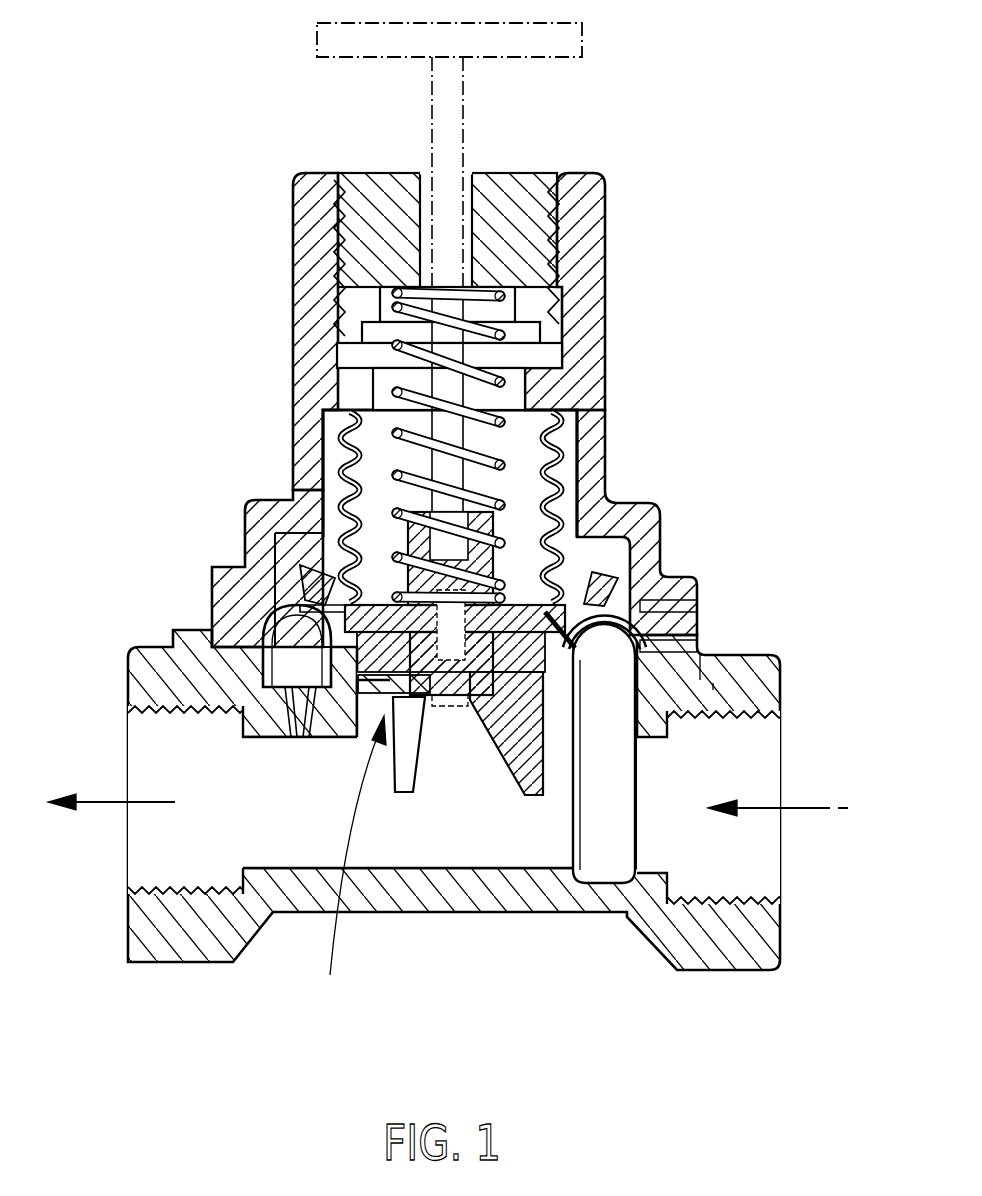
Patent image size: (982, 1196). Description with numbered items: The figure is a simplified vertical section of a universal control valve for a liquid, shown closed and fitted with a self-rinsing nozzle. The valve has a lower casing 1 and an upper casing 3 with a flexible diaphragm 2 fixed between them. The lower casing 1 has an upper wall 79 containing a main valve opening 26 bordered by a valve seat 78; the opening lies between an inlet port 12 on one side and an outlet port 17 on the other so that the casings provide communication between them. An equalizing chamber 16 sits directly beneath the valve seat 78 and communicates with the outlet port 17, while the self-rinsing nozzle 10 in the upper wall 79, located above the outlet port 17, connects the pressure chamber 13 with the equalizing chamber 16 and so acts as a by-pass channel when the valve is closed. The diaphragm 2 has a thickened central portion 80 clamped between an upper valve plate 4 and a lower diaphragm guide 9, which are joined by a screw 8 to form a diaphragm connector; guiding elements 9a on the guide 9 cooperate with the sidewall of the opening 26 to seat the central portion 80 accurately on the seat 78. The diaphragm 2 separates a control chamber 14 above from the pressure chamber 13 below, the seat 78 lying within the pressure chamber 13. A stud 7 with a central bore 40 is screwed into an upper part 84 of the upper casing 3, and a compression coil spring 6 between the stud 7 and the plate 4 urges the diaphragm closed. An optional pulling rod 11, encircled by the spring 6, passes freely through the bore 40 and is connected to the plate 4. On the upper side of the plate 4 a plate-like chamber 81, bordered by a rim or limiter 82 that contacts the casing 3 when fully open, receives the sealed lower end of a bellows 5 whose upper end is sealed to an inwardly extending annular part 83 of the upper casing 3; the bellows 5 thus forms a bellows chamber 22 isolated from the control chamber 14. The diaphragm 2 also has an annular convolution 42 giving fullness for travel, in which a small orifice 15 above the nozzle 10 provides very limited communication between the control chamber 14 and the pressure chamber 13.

The lower casing 1 is at (735, 662).
The flexible diaphragm 2 is at (672, 600).
The upper casing 3 is at (620, 517).
The upper valve plate 4 is at (602, 576).
The bellows 5 is at (552, 460).
The compression coil spring 6 is at (530, 333).
The stud 7 is at (520, 210).
The screw 8 is at (440, 700).
The lower diaphragm guide 9 is at (485, 700).
The guiding elements 9a is at (405, 760).
The self-rinsing nozzle 10 is at (300, 622).
The pulling rod 11 is at (584, 45).
The inlet port 12 is at (737, 855).
The pressure chamber 13 is at (713, 683).
The control chamber 14 is at (300, 540).
The orifice 15 is at (275, 605).
The equalizing chamber 16 is at (515, 820).
The outlet port 17 is at (170, 750).
The bellows chamber 22 is at (380, 450).
The main valve opening 26 is at (348, 861).
The central bore 40 is at (466, 178).
The annular convolution 42 is at (628, 592).
The valve seat 78 is at (604, 650).
The upper wall 79 is at (235, 665).
The thickened central portion 80 is at (643, 660).
The plate-like chamber 81 is at (325, 568).
The rim or limiter 82 is at (312, 562).
The inwardly extending annular part 83 is at (580, 390).
The upper part 84 is at (305, 222).